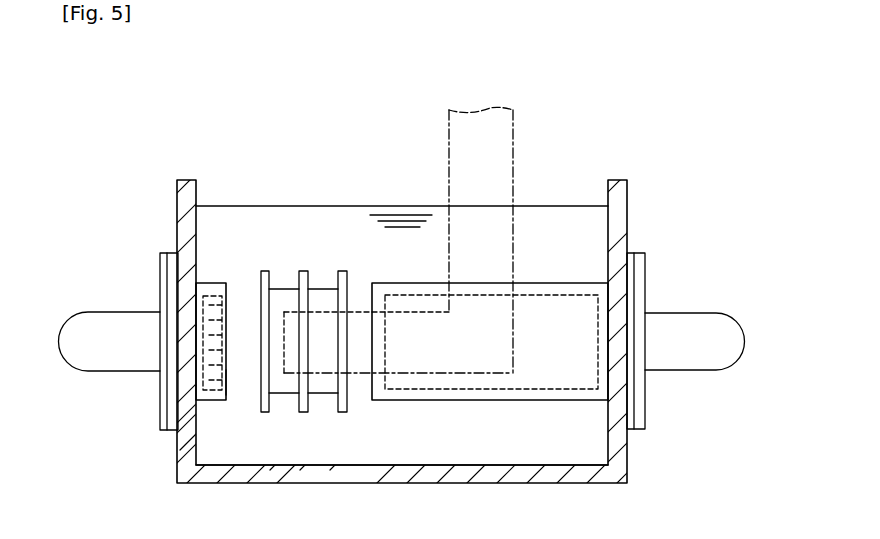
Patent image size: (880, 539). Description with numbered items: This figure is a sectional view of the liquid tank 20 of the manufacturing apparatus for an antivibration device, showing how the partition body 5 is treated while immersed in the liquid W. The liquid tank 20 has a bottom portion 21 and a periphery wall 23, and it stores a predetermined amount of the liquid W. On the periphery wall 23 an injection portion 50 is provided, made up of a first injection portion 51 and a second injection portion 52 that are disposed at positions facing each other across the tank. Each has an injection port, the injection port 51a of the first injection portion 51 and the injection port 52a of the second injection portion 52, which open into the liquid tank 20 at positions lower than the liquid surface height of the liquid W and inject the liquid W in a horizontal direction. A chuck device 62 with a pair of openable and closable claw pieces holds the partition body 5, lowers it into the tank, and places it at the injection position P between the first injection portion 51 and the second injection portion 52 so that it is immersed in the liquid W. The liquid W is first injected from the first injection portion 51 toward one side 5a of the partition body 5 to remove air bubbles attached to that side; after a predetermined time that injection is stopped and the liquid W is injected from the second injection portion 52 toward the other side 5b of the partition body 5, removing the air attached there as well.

The partition body 5 is at (298, 278).
The one side of the partition body 5a is at (345, 297).
The other side of the partition body 5b is at (258, 313).
The injection position P is at (322, 408).
The liquid tank 20 is at (634, 221).
The bottom portion 21 is at (487, 462).
The periphery wall 23 is at (187, 403).
The circulation unit 50 is at (398, 246).
The first injection portion 51 is at (578, 283).
The injection port 51a is at (373, 373).
The second injection portion 52 is at (209, 282).
The injection port 52a is at (227, 375).
The chuck device 62 is at (448, 135).
The liquid W is at (411, 213).